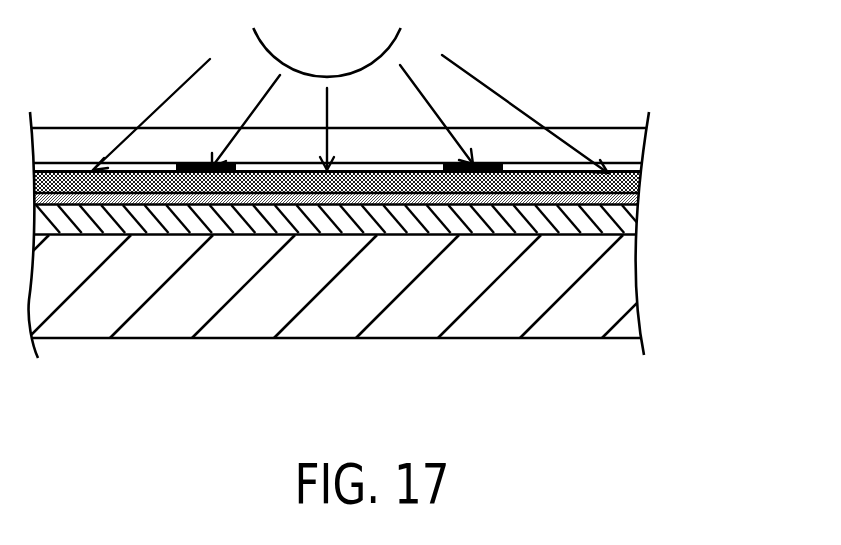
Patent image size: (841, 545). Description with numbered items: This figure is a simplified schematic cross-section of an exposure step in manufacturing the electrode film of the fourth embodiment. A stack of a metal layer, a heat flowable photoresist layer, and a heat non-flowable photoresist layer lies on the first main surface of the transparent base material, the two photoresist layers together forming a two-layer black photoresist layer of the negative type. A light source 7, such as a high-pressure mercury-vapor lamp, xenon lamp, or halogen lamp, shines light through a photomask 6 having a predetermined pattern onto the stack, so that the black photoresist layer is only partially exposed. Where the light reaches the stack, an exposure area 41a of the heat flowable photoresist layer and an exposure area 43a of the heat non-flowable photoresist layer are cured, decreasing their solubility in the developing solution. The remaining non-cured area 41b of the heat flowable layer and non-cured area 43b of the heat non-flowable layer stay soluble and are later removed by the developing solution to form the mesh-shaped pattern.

The photomask 6 is at (75, 127).
The light source 7 is at (380, 41).
The exposure area of the heat flowable photoresist layer 41a is at (354, 198).
The non-cured area of the heat flowable photoresist layer 41b is at (471, 198).
The exposure area of the heat non-flowable photoresist layer 43a is at (310, 237).
The non-cured area of the heat non-flowable photoresist layer 43b is at (418, 200).